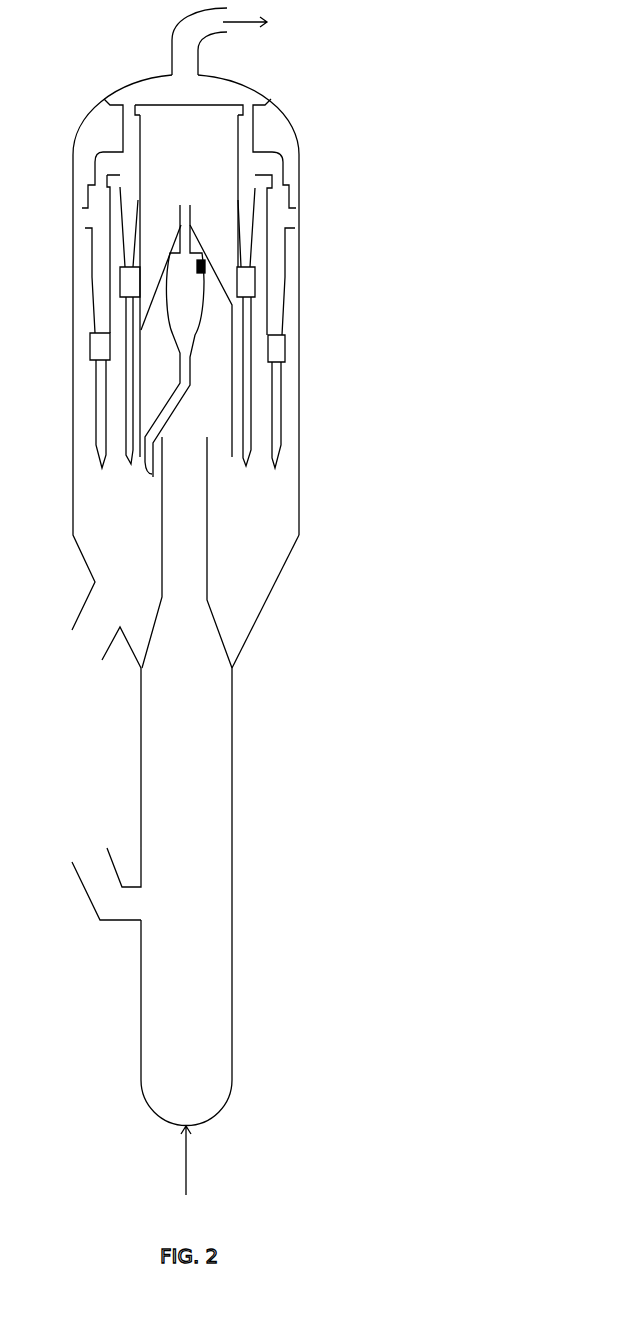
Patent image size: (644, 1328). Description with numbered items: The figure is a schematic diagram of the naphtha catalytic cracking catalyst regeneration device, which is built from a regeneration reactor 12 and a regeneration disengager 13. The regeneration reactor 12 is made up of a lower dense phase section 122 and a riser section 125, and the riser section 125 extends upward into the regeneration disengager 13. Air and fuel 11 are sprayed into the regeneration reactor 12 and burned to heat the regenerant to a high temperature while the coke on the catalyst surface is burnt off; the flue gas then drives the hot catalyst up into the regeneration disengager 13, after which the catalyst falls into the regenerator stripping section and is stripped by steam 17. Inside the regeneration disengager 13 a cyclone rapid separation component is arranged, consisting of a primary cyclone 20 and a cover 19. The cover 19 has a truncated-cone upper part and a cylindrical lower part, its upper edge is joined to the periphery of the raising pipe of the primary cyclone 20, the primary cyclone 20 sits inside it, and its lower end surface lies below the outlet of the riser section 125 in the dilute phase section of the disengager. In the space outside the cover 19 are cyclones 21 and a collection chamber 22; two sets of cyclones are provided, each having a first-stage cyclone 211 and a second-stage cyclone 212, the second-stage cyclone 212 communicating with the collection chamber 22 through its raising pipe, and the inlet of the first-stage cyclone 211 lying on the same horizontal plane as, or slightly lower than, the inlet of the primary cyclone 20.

The air and fuel 11 is at (203, 1160).
The regeneration reactor 12 is at (237, 678).
The dense phase section 122 is at (200, 770).
The riser section 125 is at (182, 498).
The regeneration disengager 13 is at (277, 493).
The steam 17 is at (265, 607).
The cover 19 is at (138, 310).
The primary cyclone 20 is at (185, 303).
The cyclones 21 is at (100, 155).
The first-stage cyclone 211 is at (272, 253).
The second-stage cyclone 212 is at (247, 148).
The collection chamber 22 is at (215, 90).